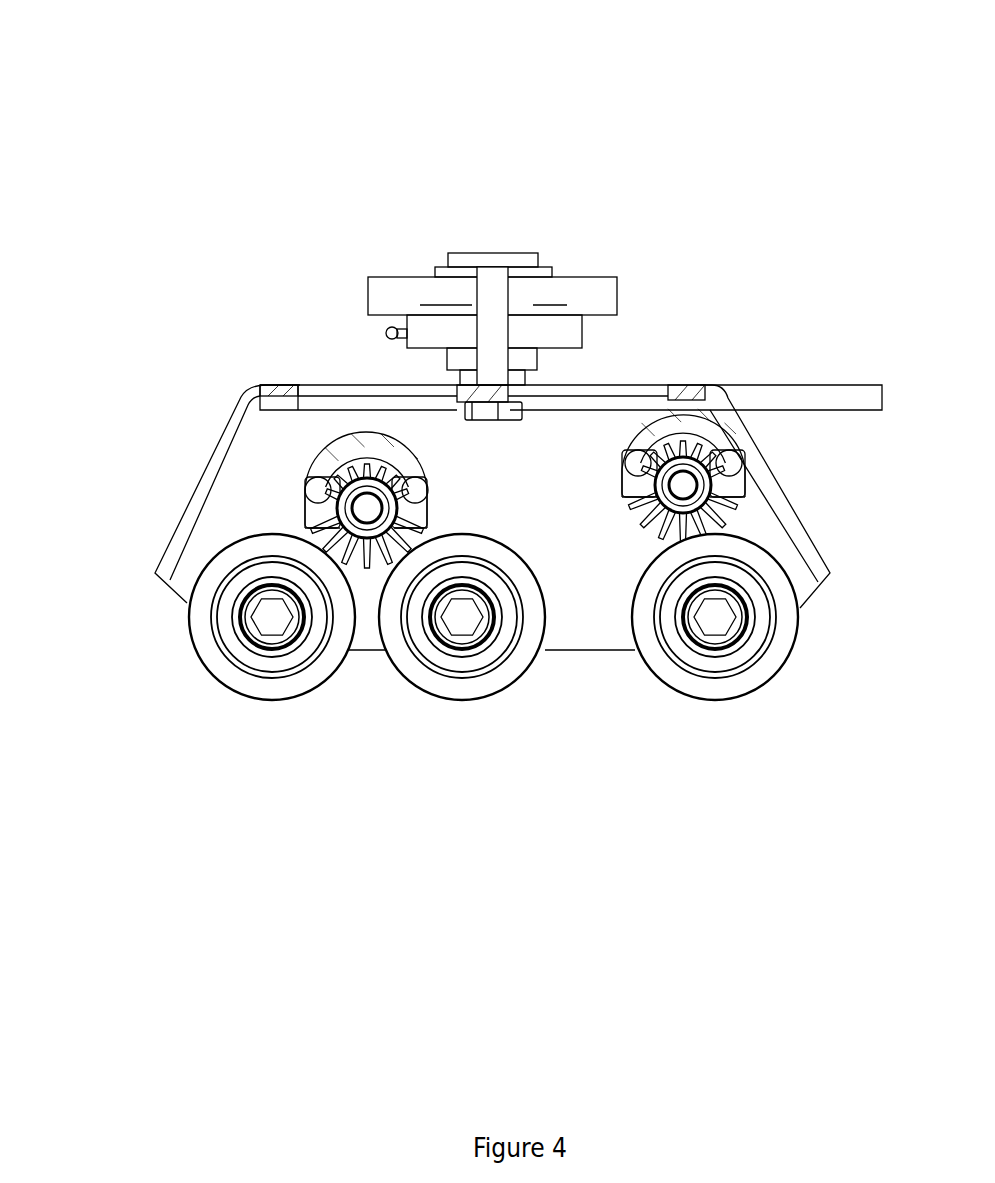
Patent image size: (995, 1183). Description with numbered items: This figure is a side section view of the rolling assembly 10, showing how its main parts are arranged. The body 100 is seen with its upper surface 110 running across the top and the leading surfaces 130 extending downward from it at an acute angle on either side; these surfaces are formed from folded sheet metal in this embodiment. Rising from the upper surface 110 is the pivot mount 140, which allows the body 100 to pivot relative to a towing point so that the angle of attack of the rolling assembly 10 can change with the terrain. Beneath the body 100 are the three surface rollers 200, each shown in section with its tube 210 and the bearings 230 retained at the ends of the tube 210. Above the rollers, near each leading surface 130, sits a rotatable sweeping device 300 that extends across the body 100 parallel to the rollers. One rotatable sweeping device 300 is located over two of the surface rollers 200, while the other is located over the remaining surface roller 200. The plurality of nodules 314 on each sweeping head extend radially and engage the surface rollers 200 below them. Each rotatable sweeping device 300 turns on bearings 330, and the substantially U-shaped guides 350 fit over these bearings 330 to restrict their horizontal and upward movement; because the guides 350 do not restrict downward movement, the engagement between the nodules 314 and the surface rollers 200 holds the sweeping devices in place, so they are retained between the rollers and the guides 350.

The rolling assembly 10 is at (820, 72).
The body 100 is at (720, 199).
The upper surface 110 is at (650, 392).
The leading surfaces 130 is at (237, 413).
The pivot mount 140 is at (540, 213).
The surface rollers 200 is at (548, 843).
The tube 210 is at (272, 683).
The bearings 230 is at (293, 640).
The rotatable sweeping devices 300 is at (113, 430).
The nodules 314 is at (312, 527).
The bearings 330 is at (335, 497).
The guides 350 is at (365, 445).